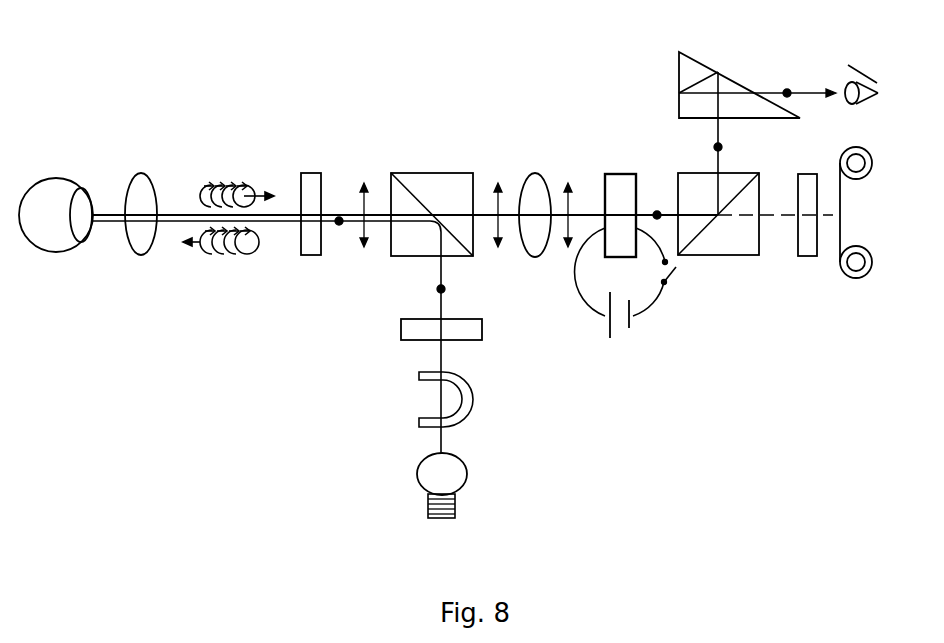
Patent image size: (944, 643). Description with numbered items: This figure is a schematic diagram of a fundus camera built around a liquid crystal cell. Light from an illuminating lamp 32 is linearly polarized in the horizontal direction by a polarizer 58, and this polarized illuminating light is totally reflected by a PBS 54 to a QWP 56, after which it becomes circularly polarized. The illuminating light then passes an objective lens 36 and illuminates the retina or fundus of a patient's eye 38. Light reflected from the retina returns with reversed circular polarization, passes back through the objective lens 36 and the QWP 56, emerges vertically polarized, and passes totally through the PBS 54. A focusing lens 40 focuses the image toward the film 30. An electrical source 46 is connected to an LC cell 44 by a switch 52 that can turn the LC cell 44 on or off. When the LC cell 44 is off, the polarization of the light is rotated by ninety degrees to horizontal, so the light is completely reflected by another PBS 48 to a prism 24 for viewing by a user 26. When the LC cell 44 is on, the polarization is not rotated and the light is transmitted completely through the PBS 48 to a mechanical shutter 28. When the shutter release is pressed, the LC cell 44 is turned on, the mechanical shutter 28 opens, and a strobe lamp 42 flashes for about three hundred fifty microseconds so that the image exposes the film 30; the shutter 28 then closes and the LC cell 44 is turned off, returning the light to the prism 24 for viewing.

The prism 24 is at (693, 58).
The user 26 is at (873, 98).
The mechanical shutter 28 is at (805, 177).
The film 30 is at (840, 237).
The illuminating lamp 32 is at (462, 480).
The objective lens 36 is at (143, 180).
The patient's eye 38 is at (57, 183).
The focusing lens 40 is at (538, 178).
The strobe lamp 42 is at (468, 410).
The LC cell 44 is at (620, 177).
The electrical source 46 is at (603, 332).
The PBS 48 is at (740, 178).
The switch 52 is at (672, 273).
The PBS 54 is at (418, 177).
The QWP 56 is at (310, 177).
The polarizer 58 is at (477, 332).